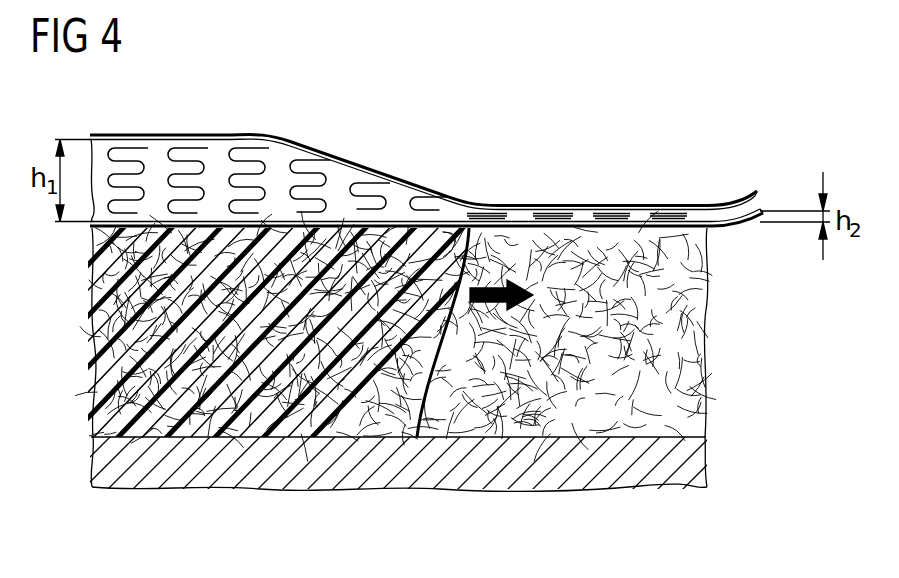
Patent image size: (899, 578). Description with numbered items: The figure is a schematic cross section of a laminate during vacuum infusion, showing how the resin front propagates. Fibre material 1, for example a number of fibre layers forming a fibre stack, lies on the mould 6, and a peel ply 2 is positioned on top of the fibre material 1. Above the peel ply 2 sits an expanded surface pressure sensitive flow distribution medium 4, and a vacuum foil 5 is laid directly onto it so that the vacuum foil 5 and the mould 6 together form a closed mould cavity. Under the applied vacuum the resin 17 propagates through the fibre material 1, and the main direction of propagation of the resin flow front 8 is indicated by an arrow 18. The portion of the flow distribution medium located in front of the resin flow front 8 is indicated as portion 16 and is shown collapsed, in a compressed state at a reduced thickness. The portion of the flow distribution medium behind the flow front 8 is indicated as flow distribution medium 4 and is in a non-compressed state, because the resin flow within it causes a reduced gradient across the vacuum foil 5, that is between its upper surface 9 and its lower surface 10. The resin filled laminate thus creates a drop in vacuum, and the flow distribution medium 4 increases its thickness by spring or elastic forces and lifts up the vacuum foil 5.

The fibre material 1 is at (710, 357).
The peel ply 2 is at (709, 226).
The flow distribution medium 4 is at (340, 175).
The vacuum foil 5 is at (748, 192).
The mould 6 is at (700, 466).
The resin flow front 8 is at (417, 437).
The upper surface 9 is at (181, 147).
The lower surface 10 is at (235, 135).
The compressed portion of flow distribution medium 16 is at (641, 217).
The resin 17 is at (106, 337).
The arrow 18 is at (503, 278).